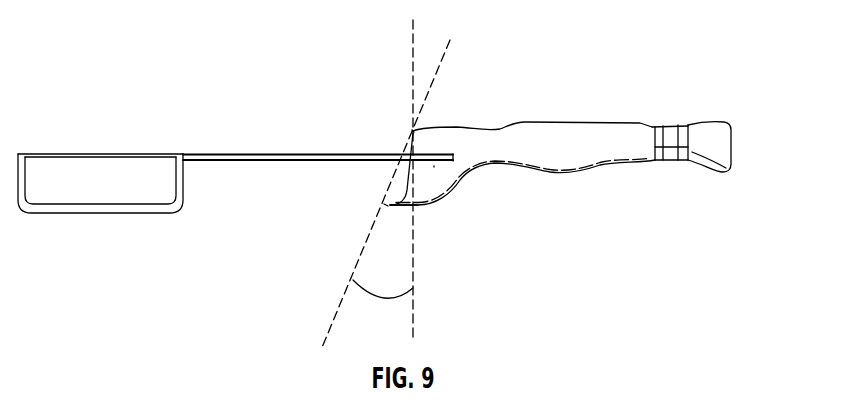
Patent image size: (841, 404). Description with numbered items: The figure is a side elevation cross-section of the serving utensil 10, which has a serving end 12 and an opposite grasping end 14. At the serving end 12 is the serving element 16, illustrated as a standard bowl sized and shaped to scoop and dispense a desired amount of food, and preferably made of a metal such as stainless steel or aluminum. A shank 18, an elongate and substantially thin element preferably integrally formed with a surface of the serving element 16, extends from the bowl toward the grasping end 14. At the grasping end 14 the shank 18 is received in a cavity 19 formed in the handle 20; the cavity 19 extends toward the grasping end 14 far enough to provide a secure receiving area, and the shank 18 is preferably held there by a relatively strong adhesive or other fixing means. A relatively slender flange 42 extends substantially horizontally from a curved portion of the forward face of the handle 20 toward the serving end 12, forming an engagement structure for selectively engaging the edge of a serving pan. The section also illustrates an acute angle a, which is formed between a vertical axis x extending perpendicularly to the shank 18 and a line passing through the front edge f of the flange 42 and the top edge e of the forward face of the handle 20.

The serving utensil 10 is at (450, 70).
The serving end 12 is at (100, 163).
The grasping end 14 is at (697, 111).
The serving element 16 is at (108, 183).
The shank 18 is at (313, 153).
The cavity 19 is at (434, 163).
The handle 20 is at (560, 127).
The flange 42 is at (385, 207).
The acute angle a is at (387, 298).
The top edge of the forward face e is at (412, 131).
The front edge of the flange f is at (385, 205).
The vertical axis x is at (415, 318).